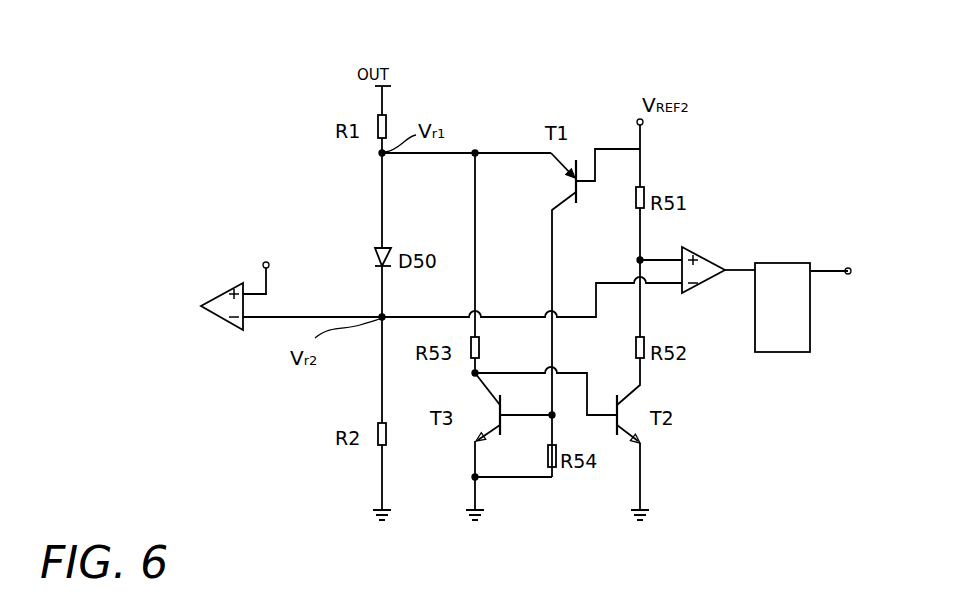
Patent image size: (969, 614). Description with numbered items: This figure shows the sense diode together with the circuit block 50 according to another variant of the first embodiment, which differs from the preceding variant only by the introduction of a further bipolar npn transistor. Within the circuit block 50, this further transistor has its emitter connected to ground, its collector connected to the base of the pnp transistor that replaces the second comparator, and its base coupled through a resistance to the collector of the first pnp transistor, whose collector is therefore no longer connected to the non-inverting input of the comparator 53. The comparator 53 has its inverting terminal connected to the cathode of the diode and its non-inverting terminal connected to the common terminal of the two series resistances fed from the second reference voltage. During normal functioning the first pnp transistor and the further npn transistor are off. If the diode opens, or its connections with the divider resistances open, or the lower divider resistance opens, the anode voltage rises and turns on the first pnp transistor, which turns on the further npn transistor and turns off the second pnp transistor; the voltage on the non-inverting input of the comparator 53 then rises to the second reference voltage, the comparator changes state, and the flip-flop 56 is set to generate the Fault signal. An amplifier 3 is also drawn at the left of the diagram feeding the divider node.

The amplifier 3 is at (218, 311).
The circuit block 50 is at (511, 90).
The comparator 53 is at (705, 268).
The flip-flop 56 is at (795, 330).